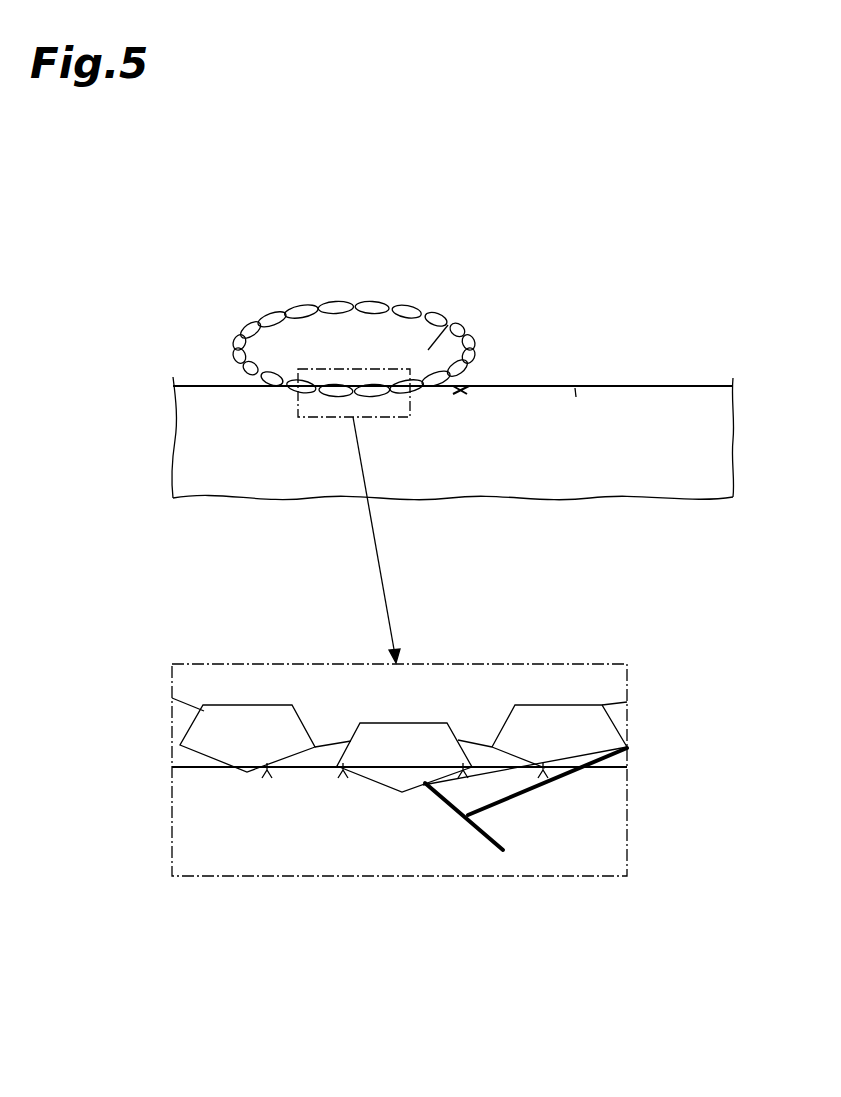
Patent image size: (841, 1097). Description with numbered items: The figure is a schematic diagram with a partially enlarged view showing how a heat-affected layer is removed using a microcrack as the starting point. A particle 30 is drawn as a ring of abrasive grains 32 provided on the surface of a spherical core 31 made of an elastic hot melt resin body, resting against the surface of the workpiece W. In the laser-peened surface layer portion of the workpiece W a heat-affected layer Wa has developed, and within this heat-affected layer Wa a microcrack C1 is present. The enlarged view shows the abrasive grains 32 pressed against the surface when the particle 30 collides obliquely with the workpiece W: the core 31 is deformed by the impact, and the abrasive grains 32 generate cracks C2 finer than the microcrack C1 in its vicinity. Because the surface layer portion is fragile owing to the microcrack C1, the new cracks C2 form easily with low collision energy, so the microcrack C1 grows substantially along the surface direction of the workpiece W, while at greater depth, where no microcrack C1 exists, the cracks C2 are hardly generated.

The particle 30 is at (422, 287).
The core 31 is at (442, 330).
The abrasive grains 32 is at (325, 310).
The workpiece W is at (625, 385).
The heat-affected layer Wa is at (697, 392).
The microcrack C1 is at (462, 387).
The cracks C2 is at (262, 778).